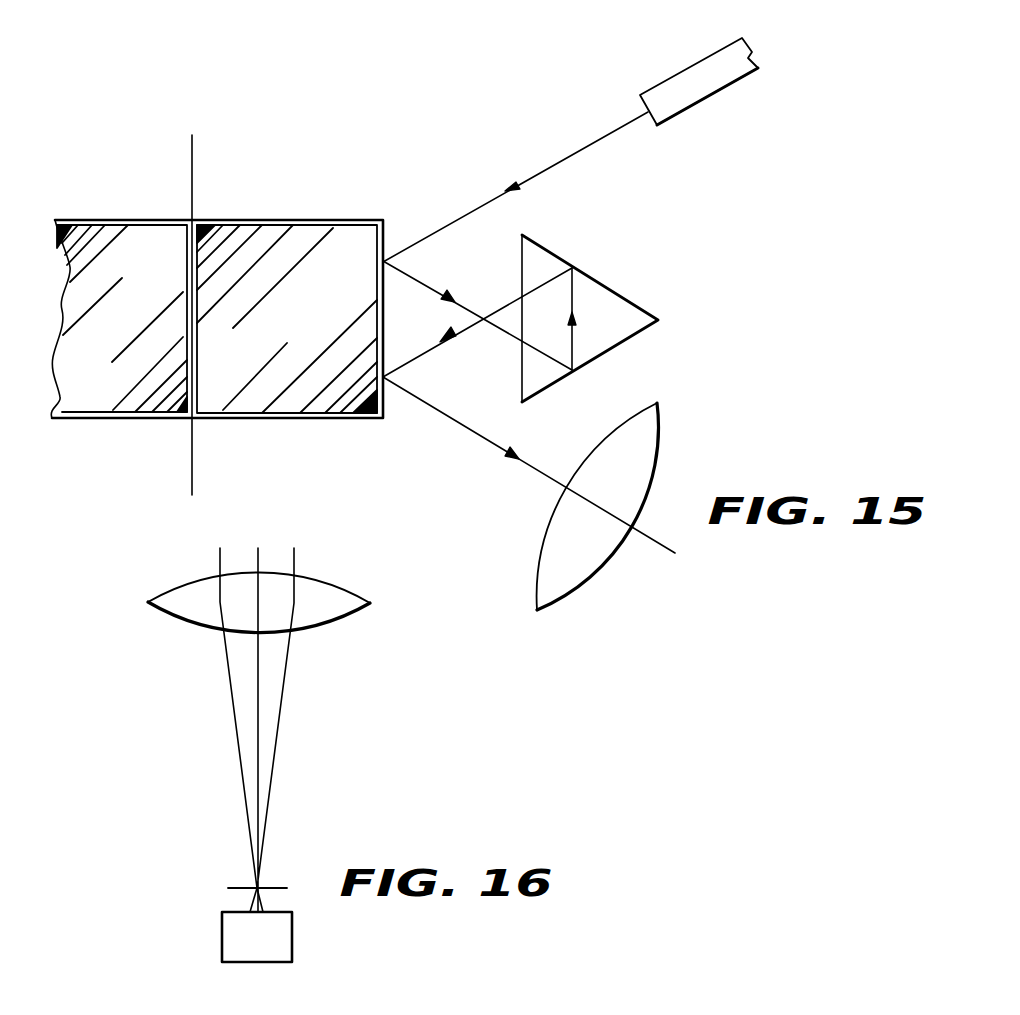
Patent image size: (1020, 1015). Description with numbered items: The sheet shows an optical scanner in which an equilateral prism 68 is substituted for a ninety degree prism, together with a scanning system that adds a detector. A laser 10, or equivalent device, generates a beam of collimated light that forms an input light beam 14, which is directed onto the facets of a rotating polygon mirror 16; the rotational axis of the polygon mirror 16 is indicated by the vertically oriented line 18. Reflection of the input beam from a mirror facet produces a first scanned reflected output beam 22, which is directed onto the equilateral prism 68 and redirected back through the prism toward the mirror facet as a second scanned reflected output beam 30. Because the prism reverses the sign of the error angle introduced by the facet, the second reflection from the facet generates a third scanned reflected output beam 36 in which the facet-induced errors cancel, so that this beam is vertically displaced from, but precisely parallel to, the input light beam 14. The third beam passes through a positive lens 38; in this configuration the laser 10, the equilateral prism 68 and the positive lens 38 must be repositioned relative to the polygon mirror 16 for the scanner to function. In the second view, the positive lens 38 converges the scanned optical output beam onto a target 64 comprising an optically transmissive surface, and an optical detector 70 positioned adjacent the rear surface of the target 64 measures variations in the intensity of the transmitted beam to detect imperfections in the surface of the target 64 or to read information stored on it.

In FIG. 15, the laser 10 is at (657, 86).
In FIG. 15, the input light beam 14 is at (463, 213).
In FIG. 15, the rotating polygon mirror 16 is at (300, 219).
In FIG. 15, the rotational axis 18 is at (193, 200).
In FIG. 15, the first scanned reflected output beam 22 is at (430, 287).
In FIG. 15, the second scanned reflected output beam 30 is at (431, 351).
In FIG. 15, the third scanned reflected output beam 36 is at (478, 438).
In FIG. 15, the positive lens 38 is at (657, 468).
In FIG. 16, the positive lens 38 is at (190, 626).
In FIG. 16, the target 64 is at (237, 887).
In FIG. 15, the equilateral prism 68 is at (629, 301).
In FIG. 16, the optical detector 70 is at (222, 927).